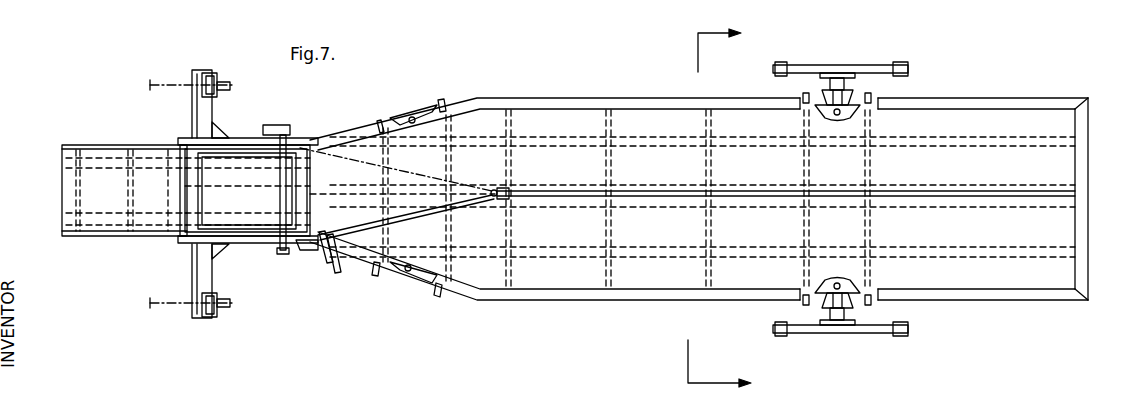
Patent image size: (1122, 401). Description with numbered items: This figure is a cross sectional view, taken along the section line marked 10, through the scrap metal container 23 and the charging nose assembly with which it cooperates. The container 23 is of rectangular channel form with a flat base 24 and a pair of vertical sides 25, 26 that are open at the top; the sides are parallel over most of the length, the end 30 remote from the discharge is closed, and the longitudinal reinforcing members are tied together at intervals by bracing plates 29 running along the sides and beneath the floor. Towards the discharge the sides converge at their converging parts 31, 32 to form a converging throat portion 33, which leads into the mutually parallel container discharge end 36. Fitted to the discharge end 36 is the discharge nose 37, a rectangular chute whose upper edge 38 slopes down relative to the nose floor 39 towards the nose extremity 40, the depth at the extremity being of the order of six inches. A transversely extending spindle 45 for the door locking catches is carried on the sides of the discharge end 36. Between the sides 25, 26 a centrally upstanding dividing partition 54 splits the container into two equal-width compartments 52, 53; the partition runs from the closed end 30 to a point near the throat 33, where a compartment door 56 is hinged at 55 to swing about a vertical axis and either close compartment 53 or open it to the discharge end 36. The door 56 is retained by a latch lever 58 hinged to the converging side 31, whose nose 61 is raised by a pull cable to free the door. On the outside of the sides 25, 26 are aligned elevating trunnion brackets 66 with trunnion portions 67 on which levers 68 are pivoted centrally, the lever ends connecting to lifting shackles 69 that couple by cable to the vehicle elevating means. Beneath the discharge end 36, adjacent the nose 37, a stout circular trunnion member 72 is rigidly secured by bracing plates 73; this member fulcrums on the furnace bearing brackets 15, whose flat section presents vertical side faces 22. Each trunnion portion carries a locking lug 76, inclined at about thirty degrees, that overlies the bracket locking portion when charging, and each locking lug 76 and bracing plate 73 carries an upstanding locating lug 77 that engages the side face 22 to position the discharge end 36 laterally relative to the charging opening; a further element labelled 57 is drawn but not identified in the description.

The section line for FIG. 10 is at (731, 209).
The bearing bracket 15 is at (181, 69).
The side face 22 is at (153, 88).
The scrap metal container 23 is at (580, 94).
The flat base 24 is at (668, 100).
The vertical side 25 is at (753, 297).
The vertical side 26 is at (767, 98).
The bracing plate 29 is at (510, 100).
The closed end 30 is at (1082, 170).
The converging part 31 is at (373, 276).
The converging part 32 is at (372, 124).
The converging throat portion 33 is at (339, 128).
The container discharge end 36 is at (185, 139).
The discharge nose 37 is at (163, 144).
The upper edge 38 is at (111, 143).
The nose floor 39 is at (126, 191).
The nose extremity 40 is at (62, 187).
The spindle 45 is at (294, 124).
The compartment 52 is at (533, 128).
The compartment 53 is at (660, 290).
The dividing partition 54 is at (660, 173).
The hinge 55 is at (496, 188).
The compartment door 56 is at (404, 221).
The bracket 57 is at (304, 256).
The latch lever 58 is at (329, 268).
The nose 61 is at (320, 232).
The elevating trunnion bracket 66 is at (858, 94).
The trunnion portion 67 is at (850, 72).
The lever 68 is at (826, 50).
The lifting shackle 69 is at (897, 63).
The trunnion member 72 is at (186, 266).
The bracing plate 73 is at (214, 128).
The locking lug 76 is at (215, 76).
The locating lug 77 is at (198, 100).